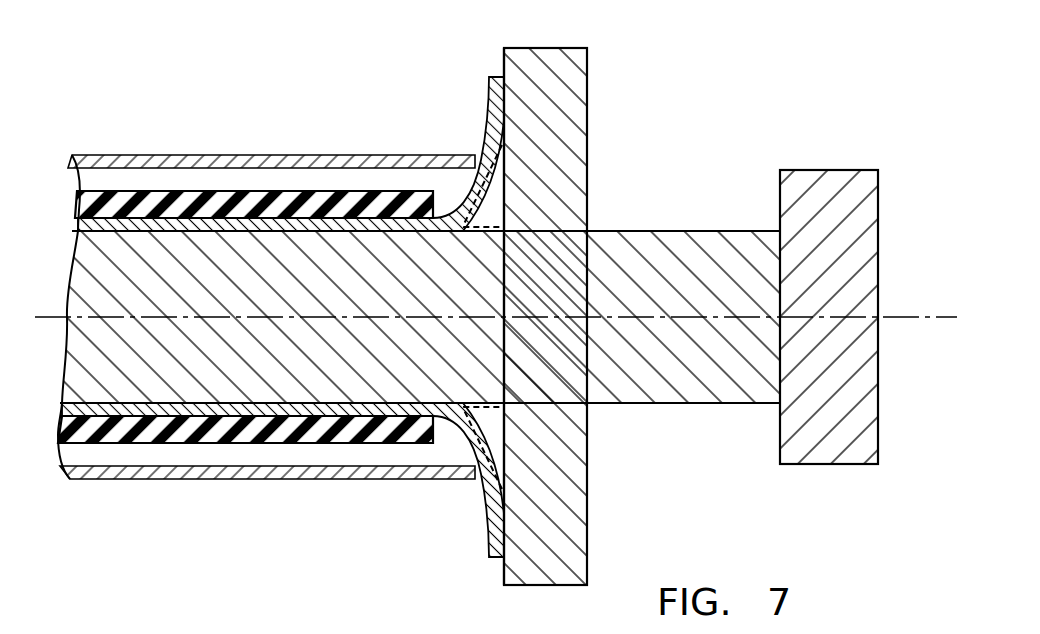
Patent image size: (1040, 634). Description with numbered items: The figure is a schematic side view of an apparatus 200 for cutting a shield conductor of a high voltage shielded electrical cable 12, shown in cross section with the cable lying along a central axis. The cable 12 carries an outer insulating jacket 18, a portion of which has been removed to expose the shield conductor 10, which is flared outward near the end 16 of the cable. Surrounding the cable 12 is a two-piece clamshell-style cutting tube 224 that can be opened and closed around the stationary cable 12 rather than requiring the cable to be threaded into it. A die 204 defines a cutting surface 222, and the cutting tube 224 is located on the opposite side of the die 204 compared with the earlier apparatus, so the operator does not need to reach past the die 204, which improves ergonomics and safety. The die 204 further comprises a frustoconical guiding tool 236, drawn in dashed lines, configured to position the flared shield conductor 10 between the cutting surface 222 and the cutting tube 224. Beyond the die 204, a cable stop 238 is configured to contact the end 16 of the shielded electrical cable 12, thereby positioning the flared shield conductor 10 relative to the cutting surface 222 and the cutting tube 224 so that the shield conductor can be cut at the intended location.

The apparatus 200 is at (747, 53).
The shield conductor 10 is at (490, 117).
The high voltage shielded electrical cable 12 is at (205, 435).
The end 16 is at (662, 393).
The outer insulating jacket 18 is at (195, 198).
The die 204 is at (572, 102).
The cutting surface 222 is at (503, 572).
The cutting tube 224 is at (291, 155).
The frustoconical guiding tool 236 is at (490, 205).
The cable stop 238 is at (832, 177).